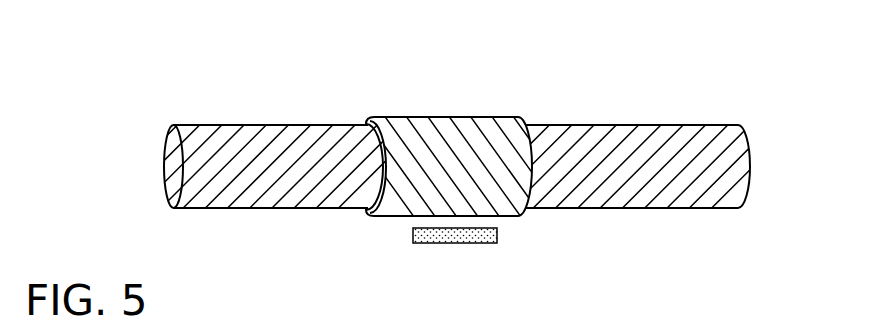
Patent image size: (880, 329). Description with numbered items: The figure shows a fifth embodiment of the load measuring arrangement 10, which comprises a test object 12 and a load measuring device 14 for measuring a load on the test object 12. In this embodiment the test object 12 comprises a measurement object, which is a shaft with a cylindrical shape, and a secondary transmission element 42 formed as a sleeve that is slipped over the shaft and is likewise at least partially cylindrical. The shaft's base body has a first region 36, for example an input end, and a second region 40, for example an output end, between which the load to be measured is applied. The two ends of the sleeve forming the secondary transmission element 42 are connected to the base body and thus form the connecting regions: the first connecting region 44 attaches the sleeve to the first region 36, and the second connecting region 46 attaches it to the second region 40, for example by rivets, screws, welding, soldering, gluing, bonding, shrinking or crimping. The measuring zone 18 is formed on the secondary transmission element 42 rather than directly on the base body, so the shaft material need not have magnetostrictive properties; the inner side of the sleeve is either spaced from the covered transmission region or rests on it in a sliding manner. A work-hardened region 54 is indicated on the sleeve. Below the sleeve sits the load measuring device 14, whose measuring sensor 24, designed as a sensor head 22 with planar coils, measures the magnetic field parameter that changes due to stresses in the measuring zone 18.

The load measuring arrangement 10 is at (444, 159).
The test object 12 is at (473, 159).
The load measuring device 14 is at (436, 273).
The measuring zone 18 is at (462, 118).
The sensor head 22 is at (473, 273).
The measuring sensor 24 is at (473, 273).
The first region 36 is at (342, 150).
The second region 40 is at (560, 172).
The secondary transmission element 42 is at (457, 117).
The first connecting region 44 is at (376, 112).
The second connecting region 46 is at (528, 120).
The work-hardened region 54 is at (476, 112).